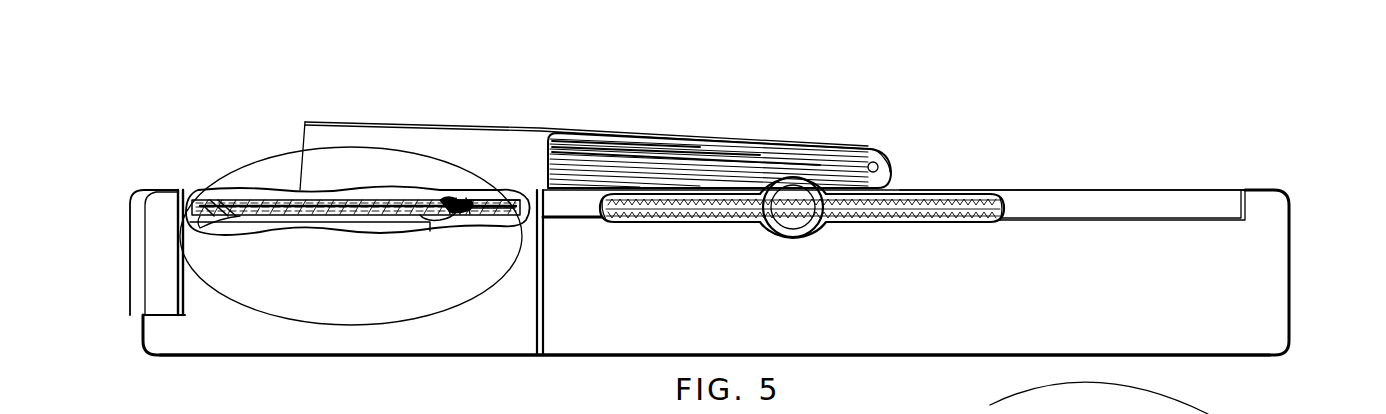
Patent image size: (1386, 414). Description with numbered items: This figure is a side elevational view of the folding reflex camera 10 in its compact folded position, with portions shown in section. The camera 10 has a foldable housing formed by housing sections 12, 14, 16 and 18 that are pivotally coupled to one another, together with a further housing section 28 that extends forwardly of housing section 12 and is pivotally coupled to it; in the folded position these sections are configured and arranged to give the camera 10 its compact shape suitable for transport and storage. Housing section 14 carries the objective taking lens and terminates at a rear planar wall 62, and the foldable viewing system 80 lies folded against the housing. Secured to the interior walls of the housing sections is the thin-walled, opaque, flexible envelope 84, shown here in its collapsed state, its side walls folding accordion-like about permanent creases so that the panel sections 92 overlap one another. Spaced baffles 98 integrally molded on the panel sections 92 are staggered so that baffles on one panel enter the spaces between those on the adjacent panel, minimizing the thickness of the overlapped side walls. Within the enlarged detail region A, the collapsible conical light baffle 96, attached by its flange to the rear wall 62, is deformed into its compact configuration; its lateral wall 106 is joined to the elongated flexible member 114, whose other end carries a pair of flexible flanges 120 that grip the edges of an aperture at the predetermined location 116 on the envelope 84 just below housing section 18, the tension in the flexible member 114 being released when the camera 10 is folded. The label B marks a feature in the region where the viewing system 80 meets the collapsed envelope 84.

The folding reflex camera 10 is at (760, 113).
The housing section 12 is at (1292, 281).
The housing section 14 is at (128, 199).
The housing section 16 is at (1090, 188).
The housing section 18 is at (262, 181).
The housing section 28 is at (350, 358).
The rear planar wall 62 is at (228, 218).
The foldable viewing system 80 is at (572, 130).
The flexible envelope 84 is at (936, 200).
The panel sections 92 is at (620, 212).
The light baffle 96 is at (350, 219).
The baffles 98 is at (896, 214).
The lateral wall portion 106 is at (333, 206).
The elongated flexible member 114 is at (456, 220).
The predetermined location 116 is at (482, 204).
The flexible flanges 120 is at (452, 198).
The detail region A is at (480, 176).
The knob B is at (794, 186).